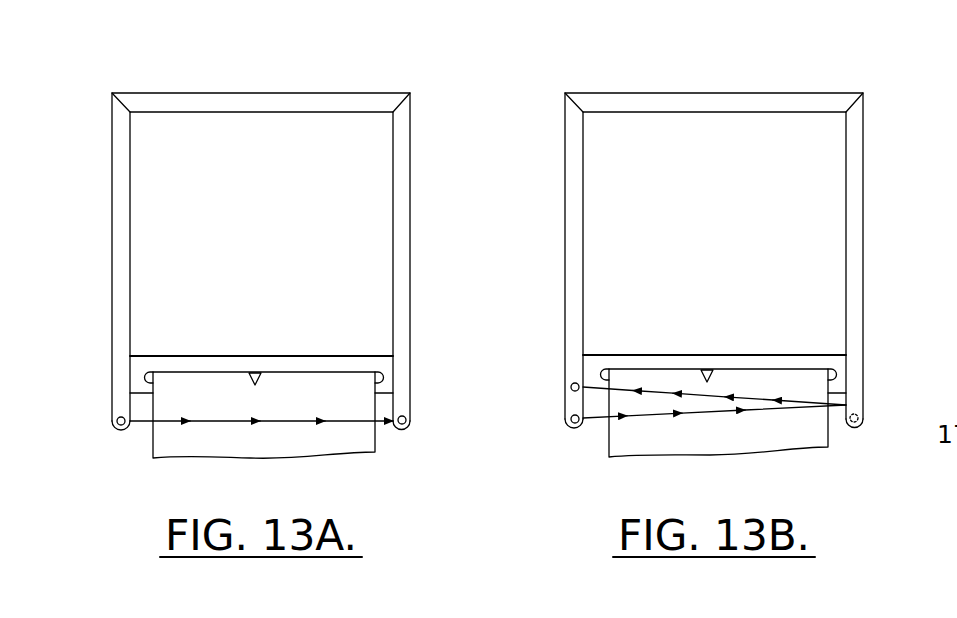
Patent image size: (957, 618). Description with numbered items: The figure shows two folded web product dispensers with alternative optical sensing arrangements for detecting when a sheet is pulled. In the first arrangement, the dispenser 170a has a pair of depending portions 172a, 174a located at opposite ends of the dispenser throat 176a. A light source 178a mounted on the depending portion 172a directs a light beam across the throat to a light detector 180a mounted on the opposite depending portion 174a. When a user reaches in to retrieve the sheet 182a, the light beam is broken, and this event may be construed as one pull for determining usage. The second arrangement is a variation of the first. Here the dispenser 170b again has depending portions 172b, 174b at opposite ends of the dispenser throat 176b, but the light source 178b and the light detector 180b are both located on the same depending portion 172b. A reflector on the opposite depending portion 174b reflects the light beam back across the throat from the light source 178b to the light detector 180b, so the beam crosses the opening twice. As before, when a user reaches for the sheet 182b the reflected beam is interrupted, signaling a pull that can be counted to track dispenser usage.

In FIG. 13A, the dispenser 170a is at (333, 100).
In FIG. 13A, the depending portion 172a is at (120, 373).
In FIG. 13A, the depending portion 174a is at (403, 374).
In FIG. 13A, the dispenser throat 176a is at (256, 372).
In FIG. 13A, the light source 178a is at (116, 424).
In FIG. 13A, the light detector 180a is at (407, 418).
In FIG. 13A, the sheet 182a is at (309, 443).
In FIG. 13B, the dispenser 170b is at (786, 98).
In FIG. 13B, the depending portion 172b is at (574, 404).
In FIG. 13B, the depending portion 174b is at (853, 373).
In FIG. 13B, the dispenser throat 176b is at (709, 369).
In FIG. 13B, the light source 178b is at (571, 422).
In FIG. 13B, the light detector 180b is at (573, 383).
In FIG. 13B, the sheet 182b is at (762, 441).